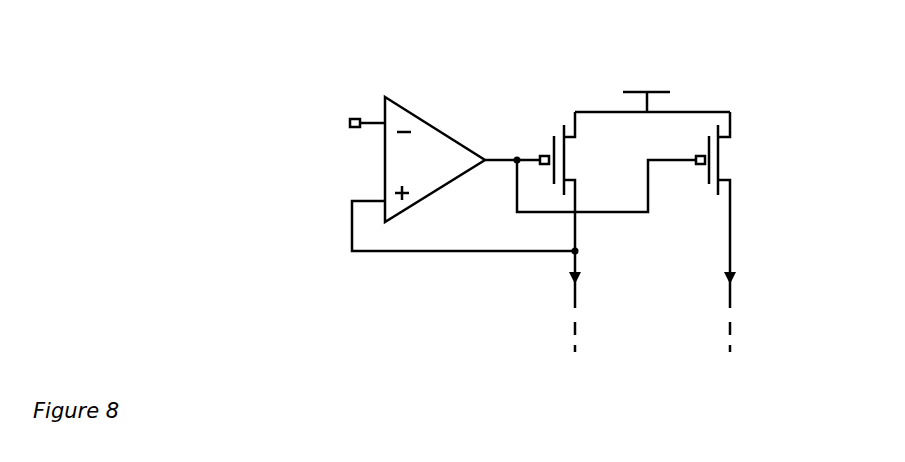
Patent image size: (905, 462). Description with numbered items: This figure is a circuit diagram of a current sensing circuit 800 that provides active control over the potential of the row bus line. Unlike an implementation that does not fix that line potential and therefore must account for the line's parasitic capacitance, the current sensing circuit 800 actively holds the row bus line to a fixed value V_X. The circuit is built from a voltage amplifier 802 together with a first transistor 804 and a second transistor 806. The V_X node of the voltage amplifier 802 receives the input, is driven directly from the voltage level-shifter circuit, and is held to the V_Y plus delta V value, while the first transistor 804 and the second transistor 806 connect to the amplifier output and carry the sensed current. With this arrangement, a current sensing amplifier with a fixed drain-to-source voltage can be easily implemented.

The current sensing circuit 800 is at (435, 373).
The voltage amplifier 802 is at (431, 115).
The transistor Q4 804 is at (592, 232).
The transistor Q5 806 is at (742, 232).